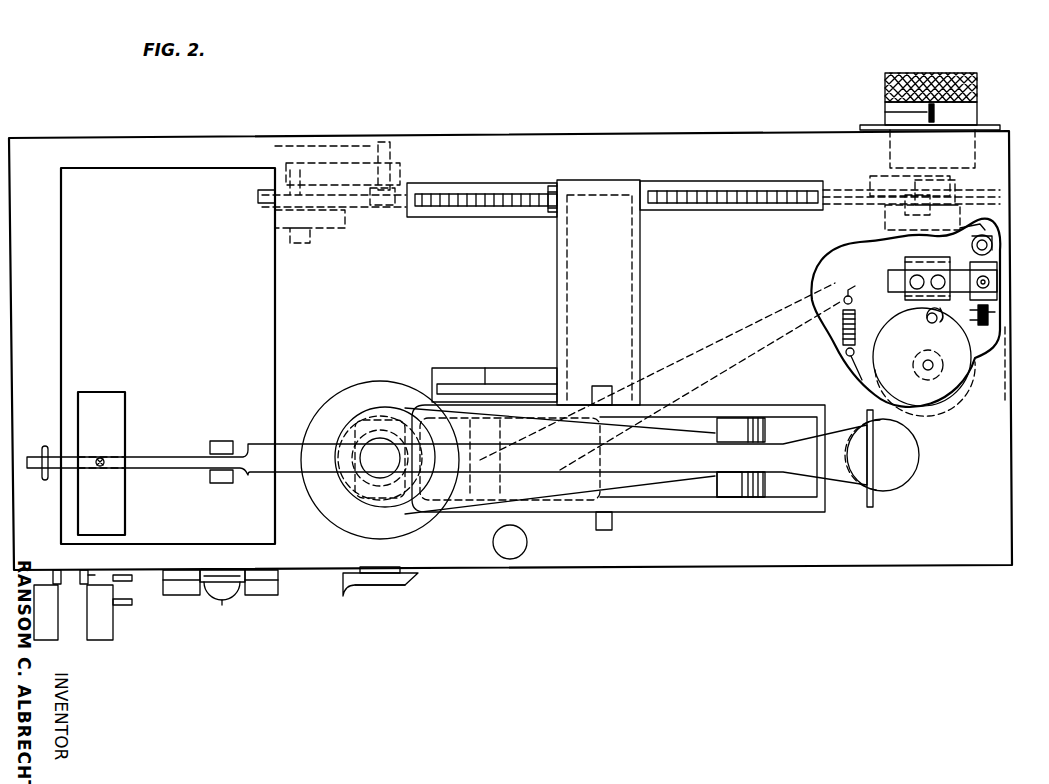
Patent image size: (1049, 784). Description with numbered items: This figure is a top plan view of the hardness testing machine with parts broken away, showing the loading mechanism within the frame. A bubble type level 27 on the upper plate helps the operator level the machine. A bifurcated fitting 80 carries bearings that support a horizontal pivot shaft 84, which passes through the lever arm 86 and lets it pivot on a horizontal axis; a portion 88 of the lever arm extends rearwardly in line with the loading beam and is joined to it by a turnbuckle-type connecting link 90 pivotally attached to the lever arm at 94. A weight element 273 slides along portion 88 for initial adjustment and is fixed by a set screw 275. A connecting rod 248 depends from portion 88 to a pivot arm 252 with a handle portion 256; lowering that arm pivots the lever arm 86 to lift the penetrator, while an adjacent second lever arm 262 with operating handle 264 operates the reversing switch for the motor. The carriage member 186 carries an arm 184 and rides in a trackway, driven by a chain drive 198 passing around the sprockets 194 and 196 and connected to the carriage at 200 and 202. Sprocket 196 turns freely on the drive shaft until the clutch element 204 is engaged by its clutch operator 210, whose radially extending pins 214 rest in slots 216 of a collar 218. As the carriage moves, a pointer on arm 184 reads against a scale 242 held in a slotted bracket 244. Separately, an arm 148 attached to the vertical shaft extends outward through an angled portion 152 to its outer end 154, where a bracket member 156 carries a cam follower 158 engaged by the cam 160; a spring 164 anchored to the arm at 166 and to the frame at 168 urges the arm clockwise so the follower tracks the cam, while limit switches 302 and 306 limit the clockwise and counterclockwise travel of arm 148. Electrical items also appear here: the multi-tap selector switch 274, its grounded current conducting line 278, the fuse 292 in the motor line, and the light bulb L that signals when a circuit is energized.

The bubble type level 27 is at (528, 545).
The bifurcated fitting 80 is at (752, 498).
The horizontal pivot shaft 84 is at (720, 498).
The lever arm 86 is at (296, 432).
The portion of lever arm 88 is at (163, 455).
The connecting link 90 is at (220, 441).
The pivotal connection of connecting link to lever arm 94 is at (212, 478).
The arm 148 is at (681, 347).
The angled portion of arm 152 is at (725, 332).
The outer end of arm 154 is at (957, 268).
The bracket member 156 is at (905, 270).
The cam follower 158 is at (937, 326).
The cam 160 is at (975, 348).
The spring 164 is at (858, 320).
The spring connection to arm 166 is at (862, 285).
The spring connection to frame structure 168 is at (862, 380).
The arm 184 is at (640, 275).
The carriage member 186 is at (558, 182).
The pulley or sprocket 194 is at (268, 192).
The pulley or sprocket 196 is at (968, 158).
The chain drive 198 is at (440, 192).
The chain connection to carriage 200 is at (546, 190).
The chain connection to carriage 202 is at (645, 190).
The clutch element 204 is at (878, 76).
The clutch operator 210 is at (978, 80).
The radially extending pins 214 is at (977, 116).
The slots 216 is at (885, 113).
The collar 218 is at (934, 118).
The scale 242 is at (486, 370).
The bracket 244 is at (442, 380).
The connecting rod 248 is at (44, 448).
The pivot arm 252 is at (64, 570).
The handle portion 256 is at (50, 640).
The second lever arm 262 is at (82, 572).
The operating handle 264 is at (113, 618).
The weight element 273 is at (88, 392).
The multi-tap selector switch 274 is at (390, 600).
The set screw 275 is at (61, 224).
The current conducting line 278 is at (352, 590).
The fuse 292 is at (182, 596).
The limit switch 302 is at (988, 308).
The limit switch 306 is at (977, 230).
The light bulb L is at (225, 605).